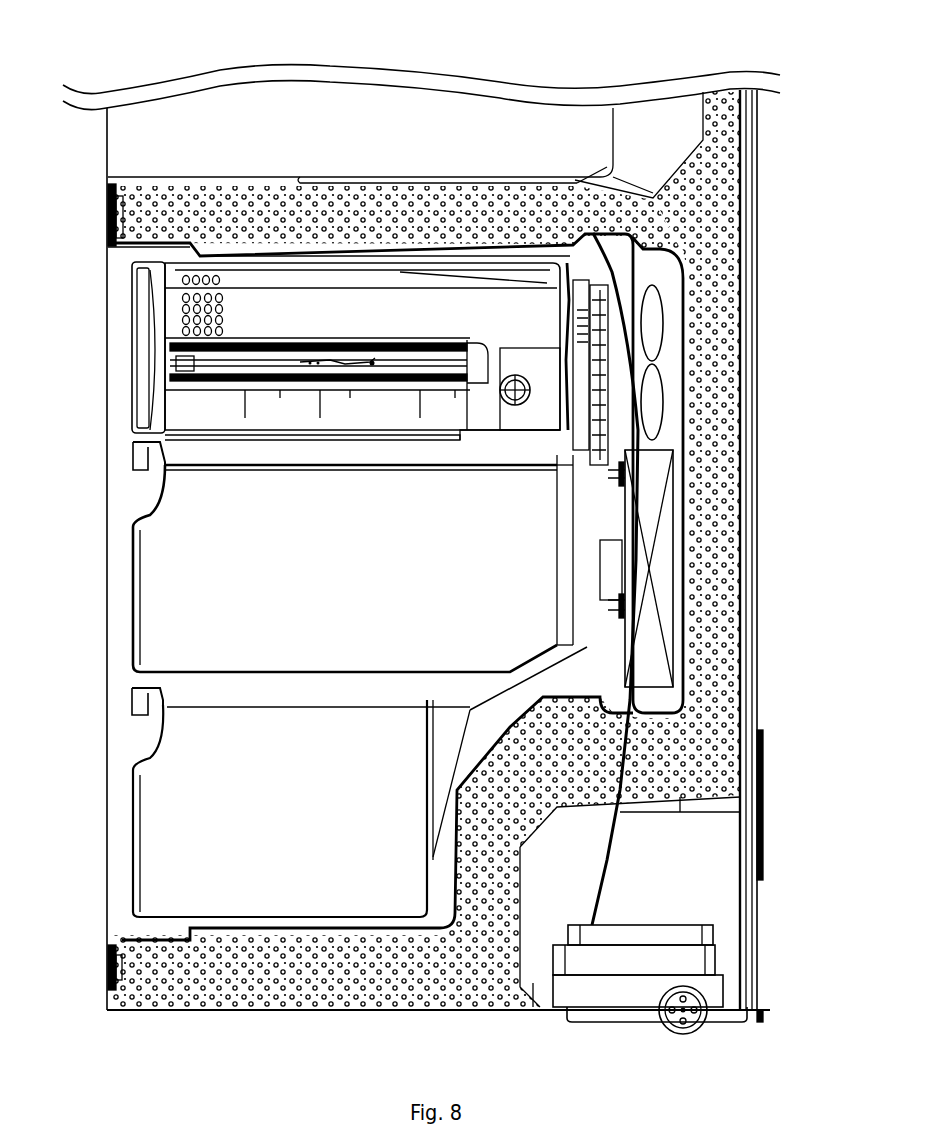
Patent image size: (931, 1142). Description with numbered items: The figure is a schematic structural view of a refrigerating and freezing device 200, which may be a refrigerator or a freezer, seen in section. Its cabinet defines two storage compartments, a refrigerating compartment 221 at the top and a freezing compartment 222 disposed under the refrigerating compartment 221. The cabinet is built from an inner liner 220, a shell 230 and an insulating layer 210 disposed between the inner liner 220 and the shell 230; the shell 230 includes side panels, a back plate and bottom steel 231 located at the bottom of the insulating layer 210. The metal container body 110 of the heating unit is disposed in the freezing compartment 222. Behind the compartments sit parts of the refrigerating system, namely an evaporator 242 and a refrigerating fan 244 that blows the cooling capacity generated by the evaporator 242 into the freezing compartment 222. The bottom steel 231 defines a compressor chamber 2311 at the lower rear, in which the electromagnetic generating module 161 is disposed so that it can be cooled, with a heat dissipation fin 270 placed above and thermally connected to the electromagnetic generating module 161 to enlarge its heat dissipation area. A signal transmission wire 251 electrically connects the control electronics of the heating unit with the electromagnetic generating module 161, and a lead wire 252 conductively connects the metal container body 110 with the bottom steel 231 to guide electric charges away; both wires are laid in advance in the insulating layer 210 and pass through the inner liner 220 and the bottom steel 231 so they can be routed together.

The refrigerating and freezing device 200 is at (72, 52).
The refrigerating compartment 221 is at (450, 130).
The inner liner 220 is at (687, 262).
The refrigerating fan 244 is at (660, 345).
The insulating layer 210 is at (723, 427).
The evaporator 242 is at (663, 538).
The shell 230 is at (753, 578).
The lead wire 252 is at (737, 772).
The compressor chamber 2311 is at (710, 852).
The heat dissipation fin 270 is at (680, 932).
The electromagnetic generating module 161 is at (625, 962).
The signal transmission wire 251 is at (600, 860).
The bottom steel 231 is at (517, 882).
The metal container body 110 is at (213, 408).
The freezing compartment 222 is at (163, 787).